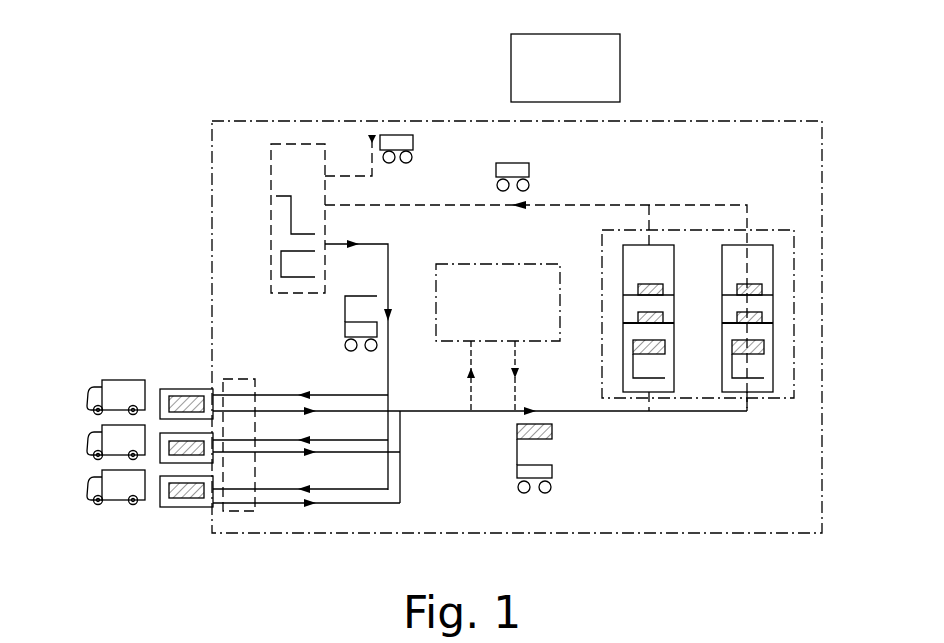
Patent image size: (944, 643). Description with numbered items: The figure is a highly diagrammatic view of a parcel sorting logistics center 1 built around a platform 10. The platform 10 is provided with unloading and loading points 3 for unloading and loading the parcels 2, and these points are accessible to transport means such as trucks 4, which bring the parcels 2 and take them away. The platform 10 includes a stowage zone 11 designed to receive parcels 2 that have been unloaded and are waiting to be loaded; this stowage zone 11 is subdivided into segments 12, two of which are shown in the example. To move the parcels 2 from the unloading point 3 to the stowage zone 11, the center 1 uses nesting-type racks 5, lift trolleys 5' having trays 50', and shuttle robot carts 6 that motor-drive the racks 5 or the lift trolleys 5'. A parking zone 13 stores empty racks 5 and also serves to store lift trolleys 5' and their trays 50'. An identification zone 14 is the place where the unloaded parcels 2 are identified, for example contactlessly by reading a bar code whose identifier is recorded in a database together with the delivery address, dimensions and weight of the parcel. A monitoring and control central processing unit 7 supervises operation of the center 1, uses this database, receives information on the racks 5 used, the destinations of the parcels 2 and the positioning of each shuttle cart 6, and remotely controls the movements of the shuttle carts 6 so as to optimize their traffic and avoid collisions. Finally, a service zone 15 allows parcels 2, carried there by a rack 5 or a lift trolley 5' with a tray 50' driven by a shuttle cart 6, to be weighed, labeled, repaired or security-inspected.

The logistics center 1 is at (706, 60).
The parcels 2 is at (665, 347).
The unloading and loading points 3 is at (166, 433).
The trucks 4 is at (120, 398).
The nesting-type racks 5 is at (454, 347).
The lift trolleys 5' is at (229, 194).
The shuttle robot carts 6 is at (396, 135).
The monitoring and control central processing unit 7 is at (565, 68).
The platform 10 is at (236, 121).
The stowage zone 11 is at (775, 230).
The segments 12 is at (698, 318).
The parking zone 13 is at (271, 170).
The identification zone 14 is at (238, 511).
The service zone 15 is at (498, 337).
The trays 50' is at (680, 216).